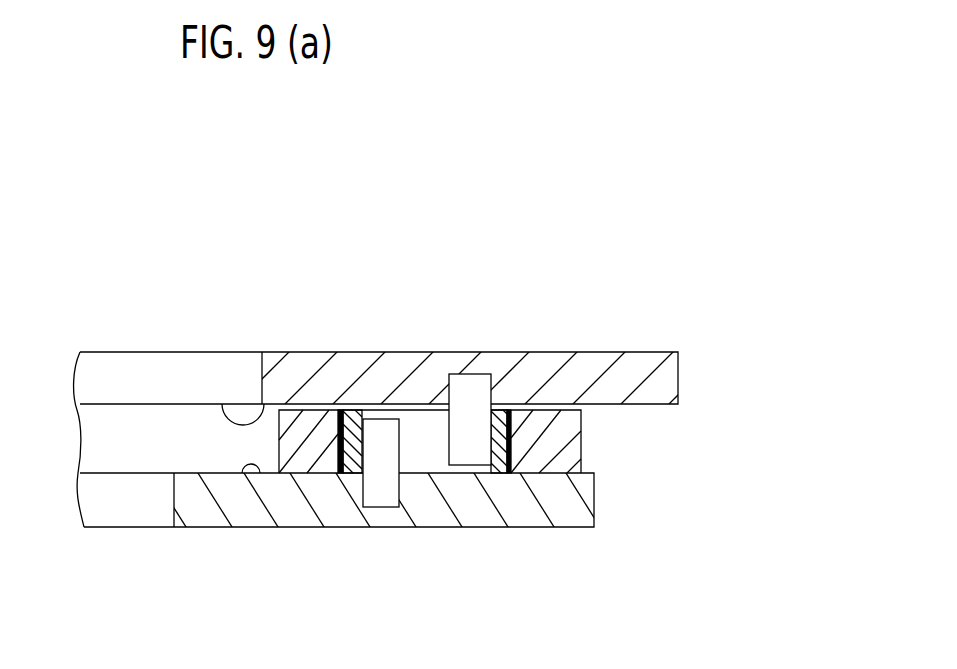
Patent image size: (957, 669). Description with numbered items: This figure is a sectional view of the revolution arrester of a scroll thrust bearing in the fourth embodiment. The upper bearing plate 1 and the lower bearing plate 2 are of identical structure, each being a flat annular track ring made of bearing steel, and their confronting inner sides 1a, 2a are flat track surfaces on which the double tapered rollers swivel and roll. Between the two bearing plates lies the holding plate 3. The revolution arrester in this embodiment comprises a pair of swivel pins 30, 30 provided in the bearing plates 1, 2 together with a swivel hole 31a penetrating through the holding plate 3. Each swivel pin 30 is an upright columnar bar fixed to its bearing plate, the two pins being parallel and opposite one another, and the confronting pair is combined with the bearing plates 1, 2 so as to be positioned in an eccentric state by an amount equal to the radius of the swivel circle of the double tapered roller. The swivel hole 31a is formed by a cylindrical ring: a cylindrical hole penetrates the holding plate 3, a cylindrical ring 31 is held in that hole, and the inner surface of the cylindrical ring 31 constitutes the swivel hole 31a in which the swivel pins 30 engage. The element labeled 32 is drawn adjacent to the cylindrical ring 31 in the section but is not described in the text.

The upper bearing plate 1 is at (694, 366).
The inner side of upper bearing plate 1a is at (222, 404).
The lower bearing plate 2 is at (609, 500).
The inner side of lower bearing plate 2a is at (242, 473).
The holding plate 3 is at (596, 443).
The swivel pin 30 is at (462, 385).
The cylindrical ring 31 is at (346, 410).
The swivel hole 31a is at (492, 438).
The core ring 32 is at (503, 432).